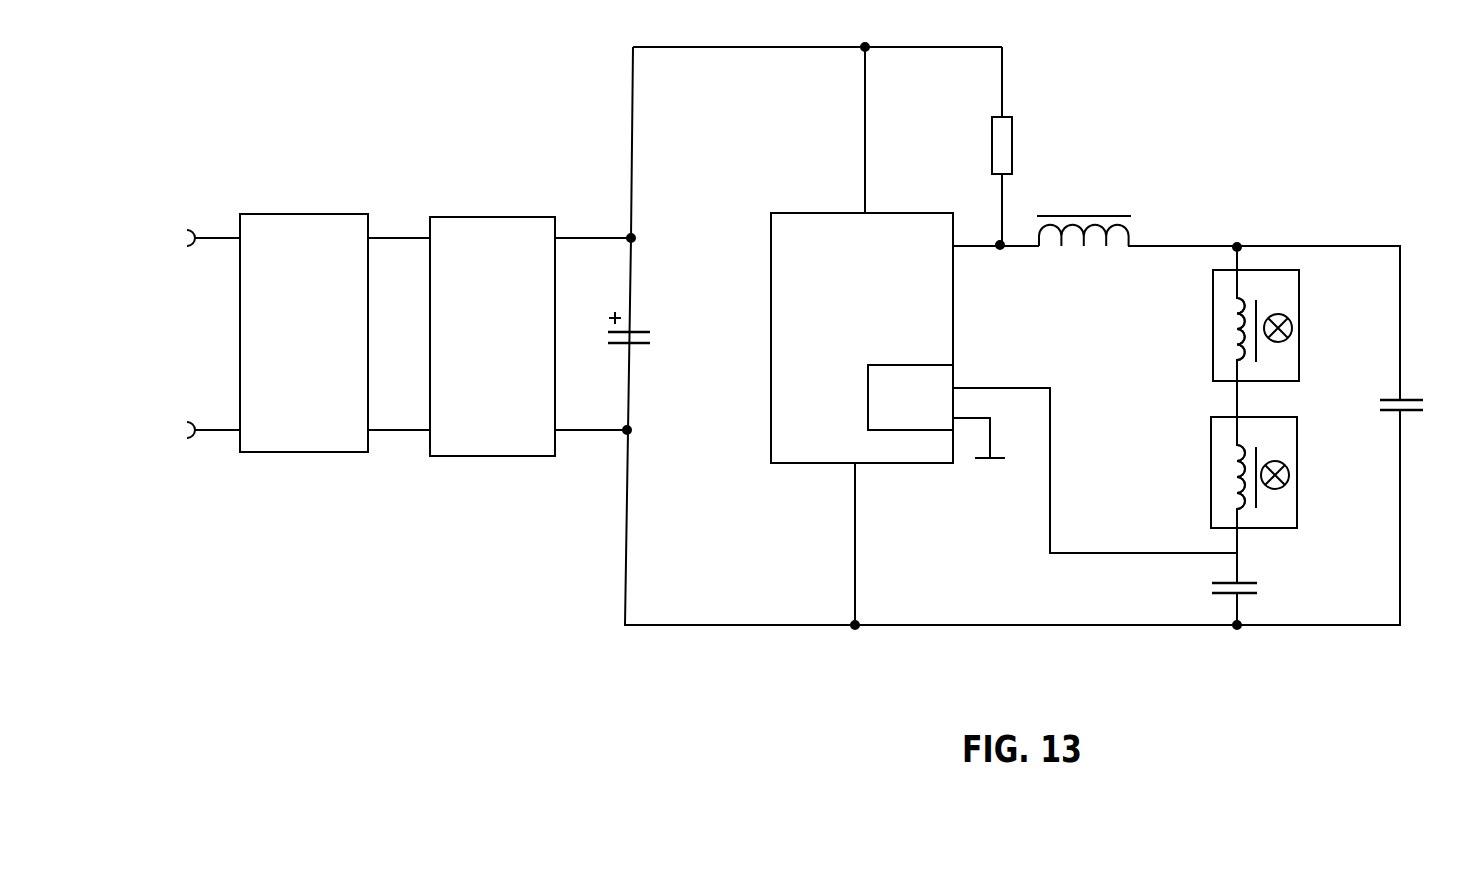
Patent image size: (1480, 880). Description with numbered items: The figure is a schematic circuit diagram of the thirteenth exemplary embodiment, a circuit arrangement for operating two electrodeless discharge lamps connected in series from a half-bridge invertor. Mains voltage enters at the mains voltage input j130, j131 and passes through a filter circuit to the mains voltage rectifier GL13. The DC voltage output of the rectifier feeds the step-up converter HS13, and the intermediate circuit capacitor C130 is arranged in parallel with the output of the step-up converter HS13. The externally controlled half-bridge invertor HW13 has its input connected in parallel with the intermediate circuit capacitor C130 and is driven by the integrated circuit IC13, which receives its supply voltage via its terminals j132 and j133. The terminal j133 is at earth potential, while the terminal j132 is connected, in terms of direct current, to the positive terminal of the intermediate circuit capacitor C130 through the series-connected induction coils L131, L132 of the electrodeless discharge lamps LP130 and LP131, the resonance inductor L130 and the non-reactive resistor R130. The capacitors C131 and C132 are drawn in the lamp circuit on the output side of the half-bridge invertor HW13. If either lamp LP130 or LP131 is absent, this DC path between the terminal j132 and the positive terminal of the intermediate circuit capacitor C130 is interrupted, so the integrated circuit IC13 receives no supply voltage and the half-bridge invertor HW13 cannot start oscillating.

The mains voltage input j130 is at (205, 218).
The mains voltage input j131 is at (202, 450).
The mains voltage rectifier GL13 is at (335, 333).
The step-up converter HS13 is at (530, 336).
The intermediate circuit capacitor C130 is at (659, 345).
The half-bridge invertor HW13 is at (862, 338).
The integrated circuit IC13 is at (910, 397).
The terminal j132 is at (1003, 372).
The terminal j133 is at (1020, 439).
The non-reactive resistor R130 is at (1037, 146).
The resonance inductor L130 is at (1084, 216).
The induction coil L131 is at (1253, 293).
The electrodeless discharge lamp LP130 is at (1300, 325).
The capacitor C131 is at (1425, 390).
The electrodeless discharge lamp LP131 is at (1297, 472).
The induction coil L132 is at (1247, 513).
The capacitor C132 is at (1200, 592).